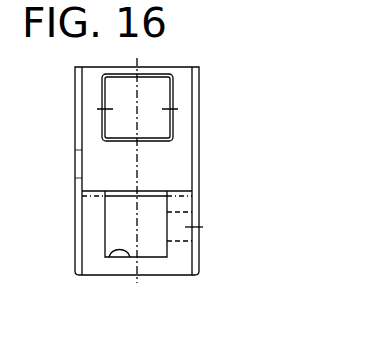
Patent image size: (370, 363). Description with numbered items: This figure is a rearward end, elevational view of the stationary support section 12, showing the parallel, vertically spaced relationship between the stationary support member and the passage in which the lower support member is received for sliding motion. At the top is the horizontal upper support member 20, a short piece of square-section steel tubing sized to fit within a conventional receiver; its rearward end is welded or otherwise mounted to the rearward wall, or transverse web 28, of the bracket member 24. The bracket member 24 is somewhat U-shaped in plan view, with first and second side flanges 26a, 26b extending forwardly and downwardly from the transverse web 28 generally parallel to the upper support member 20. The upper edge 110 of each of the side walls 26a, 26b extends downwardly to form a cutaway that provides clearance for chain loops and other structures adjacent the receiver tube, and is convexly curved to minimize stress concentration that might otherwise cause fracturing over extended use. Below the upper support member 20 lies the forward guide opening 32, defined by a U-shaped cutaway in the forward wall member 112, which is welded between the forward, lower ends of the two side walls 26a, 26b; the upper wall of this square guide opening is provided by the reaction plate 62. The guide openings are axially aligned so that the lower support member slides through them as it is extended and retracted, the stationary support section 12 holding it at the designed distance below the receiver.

The stationary support section 12 is at (208, 88).
The horizontal upper support member 20 is at (104, 93).
The bracket member 24 is at (82, 120).
The transverse web 28 is at (95, 147).
The upper edge 110 is at (80, 164).
The reaction plate 62 is at (152, 190).
The first side flange 26a is at (78, 213).
The second side flange 26b is at (198, 201).
The forward wall member 112 is at (170, 265).
The forward guide opening 32 is at (115, 258).